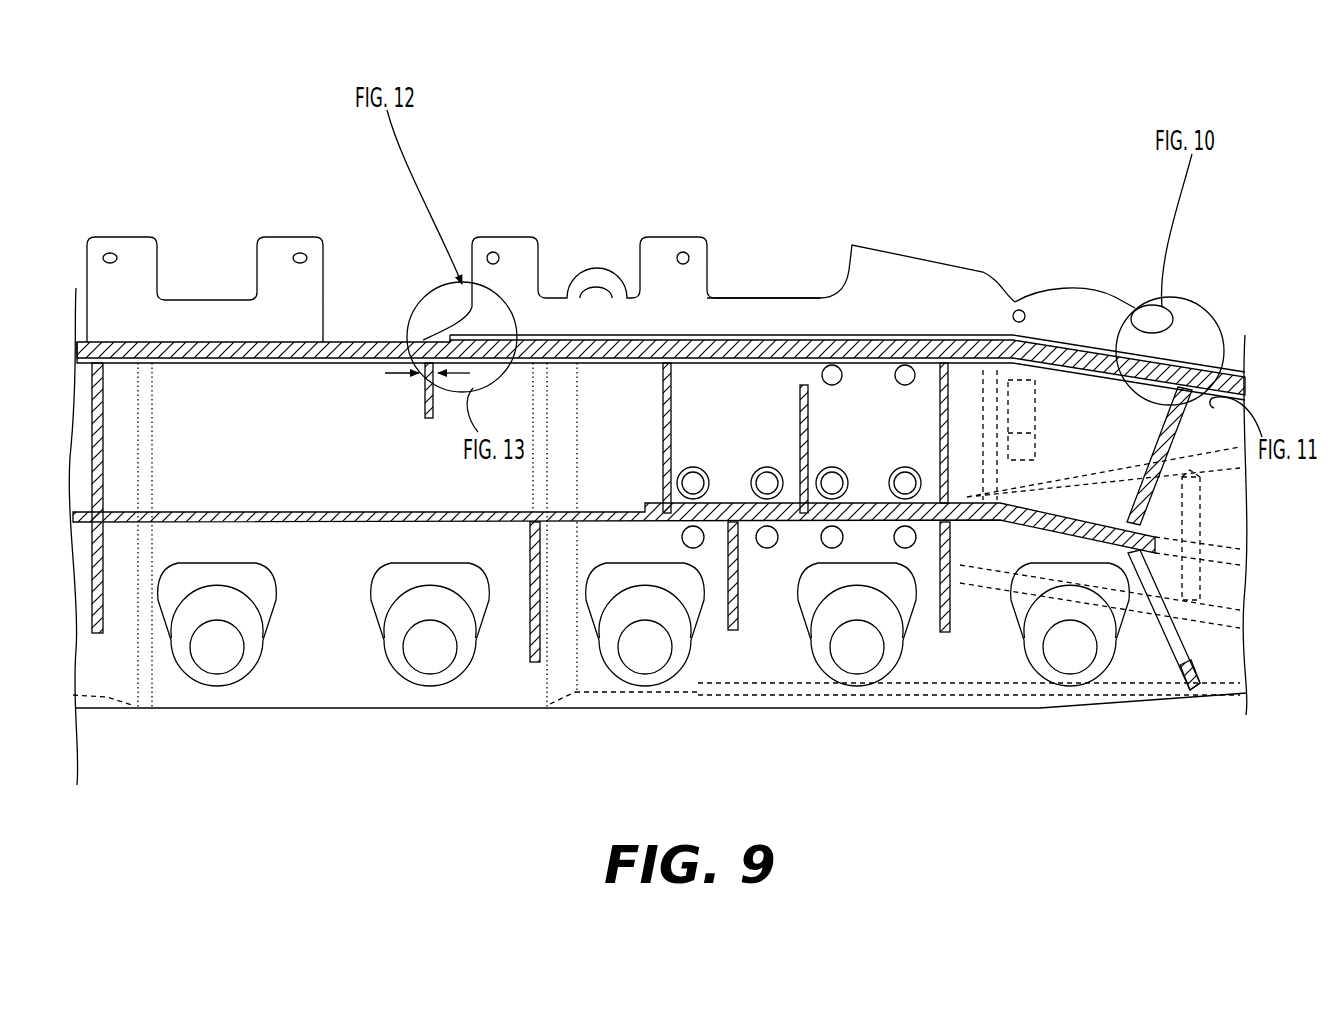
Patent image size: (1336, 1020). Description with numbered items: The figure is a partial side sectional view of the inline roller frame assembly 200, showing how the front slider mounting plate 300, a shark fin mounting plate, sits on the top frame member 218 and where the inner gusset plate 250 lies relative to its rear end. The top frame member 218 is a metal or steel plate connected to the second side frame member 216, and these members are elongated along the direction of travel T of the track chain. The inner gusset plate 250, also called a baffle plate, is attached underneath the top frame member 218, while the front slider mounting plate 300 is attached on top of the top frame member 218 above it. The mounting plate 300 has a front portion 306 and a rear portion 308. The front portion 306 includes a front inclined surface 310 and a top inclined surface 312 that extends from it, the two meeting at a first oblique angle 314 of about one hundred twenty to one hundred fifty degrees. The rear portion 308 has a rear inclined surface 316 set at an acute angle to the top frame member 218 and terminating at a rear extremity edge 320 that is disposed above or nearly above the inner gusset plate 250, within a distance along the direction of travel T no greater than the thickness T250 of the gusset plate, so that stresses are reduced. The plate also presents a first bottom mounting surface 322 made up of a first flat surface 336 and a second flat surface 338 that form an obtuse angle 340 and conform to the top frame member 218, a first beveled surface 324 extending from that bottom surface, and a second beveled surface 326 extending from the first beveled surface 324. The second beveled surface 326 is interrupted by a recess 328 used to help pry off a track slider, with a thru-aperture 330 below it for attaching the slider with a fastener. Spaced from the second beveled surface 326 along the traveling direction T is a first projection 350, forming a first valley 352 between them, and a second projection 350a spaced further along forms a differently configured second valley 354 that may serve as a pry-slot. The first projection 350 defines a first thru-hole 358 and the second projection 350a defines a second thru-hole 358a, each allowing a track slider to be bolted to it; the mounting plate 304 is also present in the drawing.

The inline roller frame assembly 200 is at (742, 83).
The second side frame member 216 is at (275, 440).
The top frame member 218 is at (372, 341).
The inner gusset plate 250 is at (432, 420).
The thickness of the inner gusset plate T250 is at (410, 373).
The front slider mounting plate 300 is at (918, 248).
The first mounting plate 304 is at (110, 233).
The front portion 306 is at (1192, 326).
The rear portion 308 is at (452, 304).
The front inclined surface 310 is at (1172, 330).
The top inclined surface 312 is at (1101, 292).
The first oblique angle 314 is at (1133, 330).
The rear inclined surface 316 is at (421, 338).
The rear extremity edge 320 is at (420, 306).
The first bottom mounting surface 322 is at (794, 284).
The first beveled surface 324 is at (1206, 343).
The second beveled surface 326 is at (1126, 306).
The recess 328 is at (1019, 297).
The thru-aperture 330 is at (1014, 309).
The first flat surface 336 is at (1078, 342).
The second flat surface 338 is at (748, 364).
The obtuse angle 340 is at (987, 368).
The first projection 350 is at (720, 258).
The second projection 350a is at (512, 230).
The first valley 352 is at (818, 333).
The second valley 354 is at (580, 282).
The first thru-hole 358 is at (681, 253).
The second thru-hole 358a is at (491, 252).
The direction of travel T is at (803, 197).